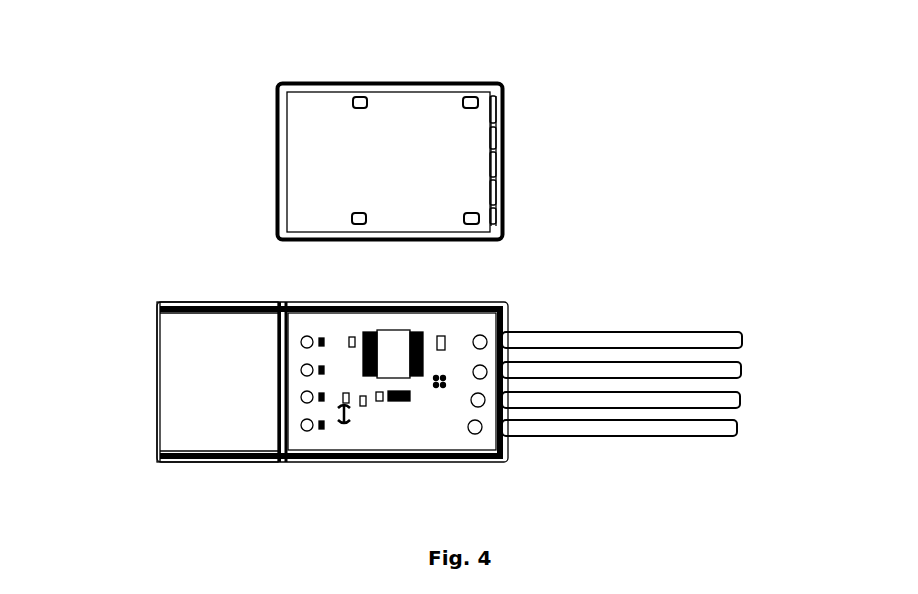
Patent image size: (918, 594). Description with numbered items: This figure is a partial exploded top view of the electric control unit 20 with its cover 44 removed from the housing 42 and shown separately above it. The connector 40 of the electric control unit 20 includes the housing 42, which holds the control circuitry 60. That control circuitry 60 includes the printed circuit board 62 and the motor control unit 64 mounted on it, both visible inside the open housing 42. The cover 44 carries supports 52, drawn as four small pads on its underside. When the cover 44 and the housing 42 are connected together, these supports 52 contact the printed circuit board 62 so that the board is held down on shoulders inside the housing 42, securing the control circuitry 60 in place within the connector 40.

The electric control unit 20 is at (157, 190).
The connector 40 is at (245, 240).
The cover 44 is at (498, 163).
The supports 52 is at (464, 216).
The control circuitry 60 is at (525, 295).
The housing 42 is at (165, 375).
The printed circuit board 62 is at (367, 442).
The motor control unit 64 is at (412, 373).